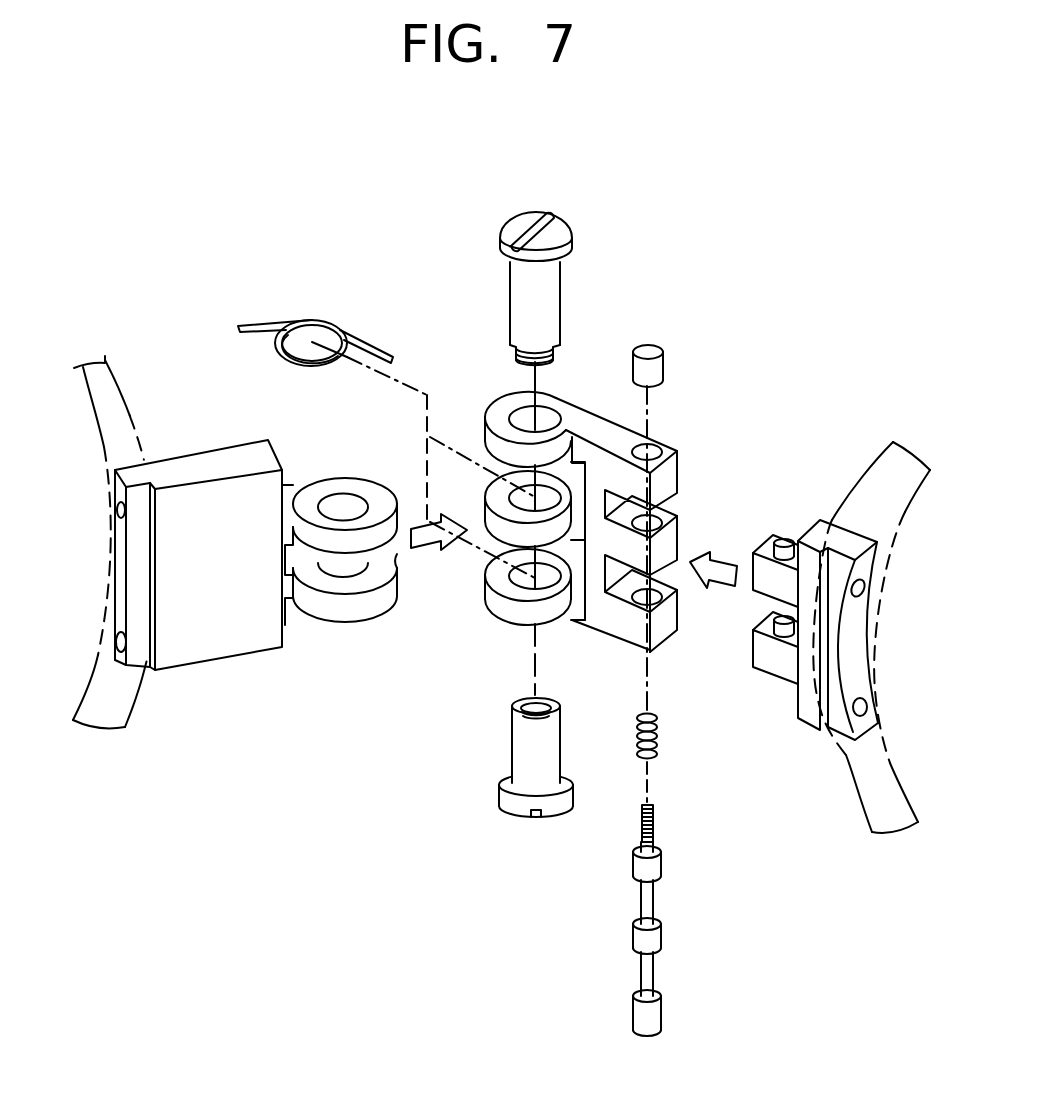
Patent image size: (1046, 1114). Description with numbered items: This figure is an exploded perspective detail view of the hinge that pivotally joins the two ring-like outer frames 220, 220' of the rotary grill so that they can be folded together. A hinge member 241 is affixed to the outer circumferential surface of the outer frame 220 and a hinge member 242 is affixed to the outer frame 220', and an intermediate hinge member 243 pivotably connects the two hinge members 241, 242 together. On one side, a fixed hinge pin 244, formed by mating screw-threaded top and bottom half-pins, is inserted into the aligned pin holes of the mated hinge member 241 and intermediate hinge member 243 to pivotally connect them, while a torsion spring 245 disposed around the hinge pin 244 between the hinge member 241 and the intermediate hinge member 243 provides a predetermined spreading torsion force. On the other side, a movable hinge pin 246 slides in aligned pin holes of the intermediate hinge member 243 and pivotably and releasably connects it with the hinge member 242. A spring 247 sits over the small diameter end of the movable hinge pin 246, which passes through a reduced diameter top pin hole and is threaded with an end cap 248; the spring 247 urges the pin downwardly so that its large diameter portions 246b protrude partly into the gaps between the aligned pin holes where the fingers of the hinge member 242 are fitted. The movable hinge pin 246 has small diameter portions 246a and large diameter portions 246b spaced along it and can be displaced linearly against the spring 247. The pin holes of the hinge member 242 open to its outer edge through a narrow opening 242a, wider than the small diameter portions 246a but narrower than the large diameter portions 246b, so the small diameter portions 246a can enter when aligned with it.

The outer frame 220 is at (122, 541).
The outer frame 220' is at (871, 604).
The hinge member 241 is at (225, 460).
The hinge member 242 is at (834, 505).
The narrow opening 242a is at (770, 548).
The intermediate hinge member 243 is at (593, 407).
The fixed hinge pin 244 is at (558, 297).
The torsion spring 245 is at (309, 318).
The movable hinge pin 246 is at (682, 861).
The small diameter portions 246a is at (656, 902).
The large diameter portions 246b is at (660, 1010).
The spring 247 is at (657, 737).
The end cap 248 is at (663, 369).